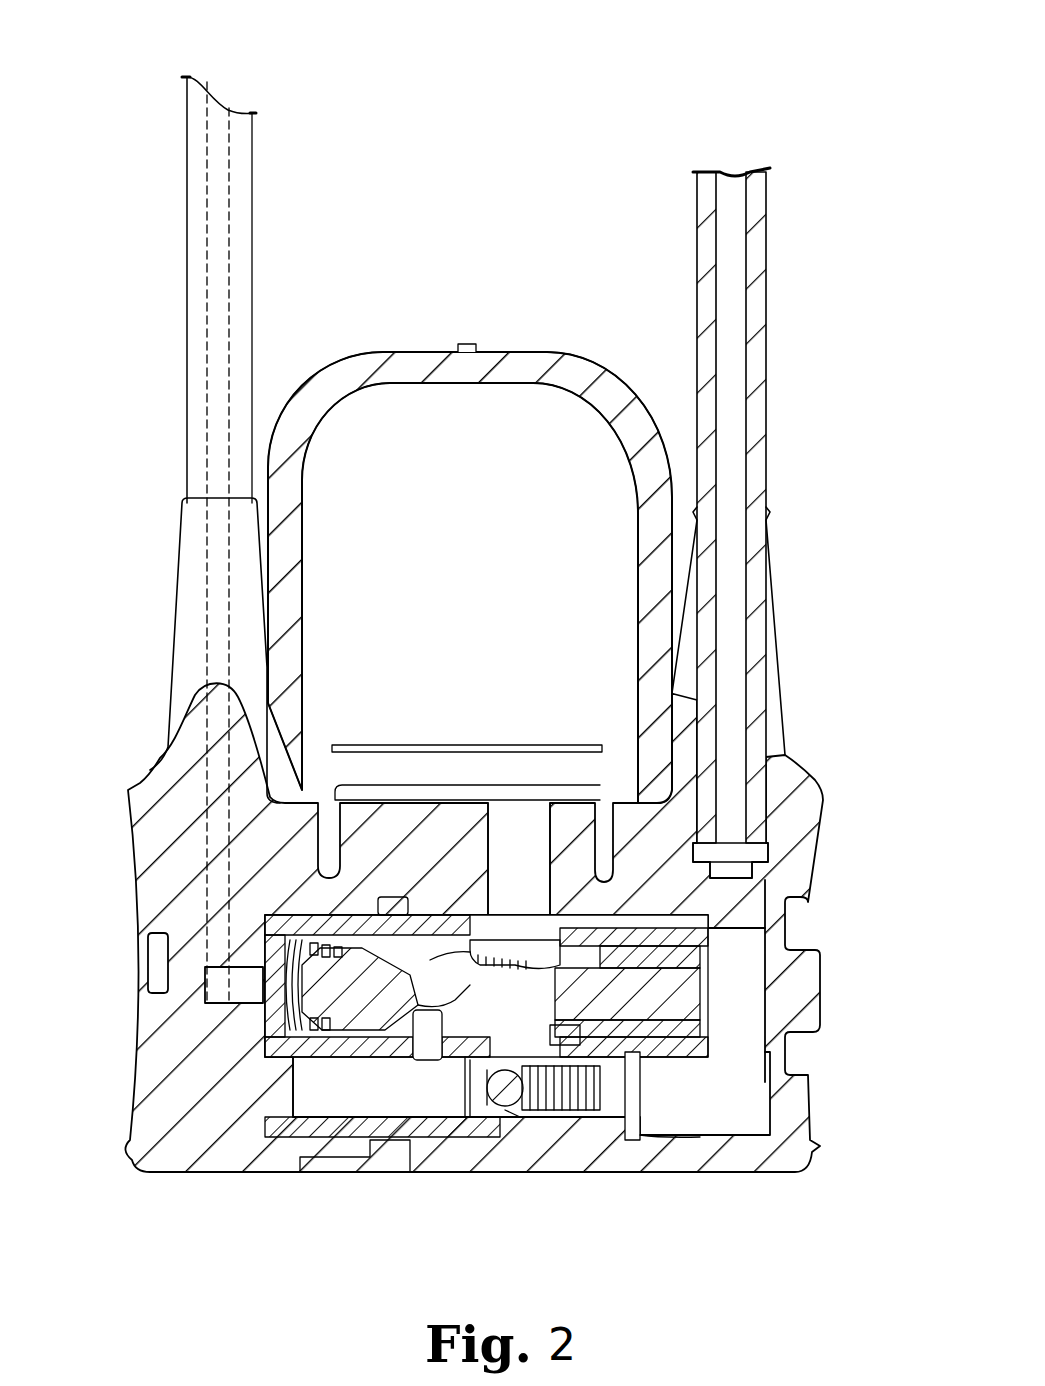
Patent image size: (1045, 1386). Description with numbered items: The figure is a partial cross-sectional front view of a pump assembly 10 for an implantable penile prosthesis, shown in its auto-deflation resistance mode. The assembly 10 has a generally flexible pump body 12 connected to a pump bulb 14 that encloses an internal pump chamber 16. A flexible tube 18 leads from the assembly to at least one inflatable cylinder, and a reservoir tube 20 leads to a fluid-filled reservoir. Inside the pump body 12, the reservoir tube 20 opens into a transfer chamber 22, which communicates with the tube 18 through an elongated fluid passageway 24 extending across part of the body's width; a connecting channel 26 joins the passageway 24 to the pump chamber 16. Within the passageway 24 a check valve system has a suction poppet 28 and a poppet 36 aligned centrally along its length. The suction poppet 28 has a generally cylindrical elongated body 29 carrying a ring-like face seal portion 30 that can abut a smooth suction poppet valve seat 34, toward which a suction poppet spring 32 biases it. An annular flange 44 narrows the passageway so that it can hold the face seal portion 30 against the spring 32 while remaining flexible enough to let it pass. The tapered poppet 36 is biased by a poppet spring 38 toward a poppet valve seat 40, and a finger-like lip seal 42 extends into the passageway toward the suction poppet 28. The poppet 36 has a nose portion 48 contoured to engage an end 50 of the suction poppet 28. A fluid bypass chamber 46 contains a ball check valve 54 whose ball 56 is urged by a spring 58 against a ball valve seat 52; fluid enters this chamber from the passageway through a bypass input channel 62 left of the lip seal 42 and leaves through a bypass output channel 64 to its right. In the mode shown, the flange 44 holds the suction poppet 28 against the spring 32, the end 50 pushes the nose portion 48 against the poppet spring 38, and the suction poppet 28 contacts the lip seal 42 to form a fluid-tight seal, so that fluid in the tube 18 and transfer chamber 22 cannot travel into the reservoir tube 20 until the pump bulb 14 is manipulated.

The pump assembly 10 is at (820, 82).
The pump body 12 is at (790, 778).
The pump bulb 14 is at (398, 375).
The internal pump chamber 16 is at (503, 420).
The tube 18 is at (756, 377).
The reservoir tube 20 is at (187, 315).
The transfer chamber 22 is at (742, 990).
The fluid passageway 24 is at (572, 1112).
The connecting channel 26 is at (525, 860).
The suction poppet 28 is at (680, 1010).
The elongated body 29 is at (503, 1106).
The face seal portion 30 is at (745, 876).
The suction poppet spring 32 is at (540, 1120).
The suction poppet valve seat 34 is at (600, 925).
The poppet 36 is at (330, 988).
The poppet spring 38 is at (440, 1005).
The poppet valve seat 40 is at (340, 940).
The lip seal 42 is at (470, 912).
The flange 44 is at (640, 1045).
The fluid bypass chamber 46 is at (412, 1125).
The nose portion 48 is at (440, 935).
The end 50 is at (395, 1060).
The ball valve seat 52 is at (478, 1120).
The ball check valve 54 is at (492, 1108).
The ball 56 is at (500, 1125).
The spring 58 is at (618, 1125).
The bypass input channel 62 is at (428, 1045).
The bypass output channel 64 is at (694, 1150).